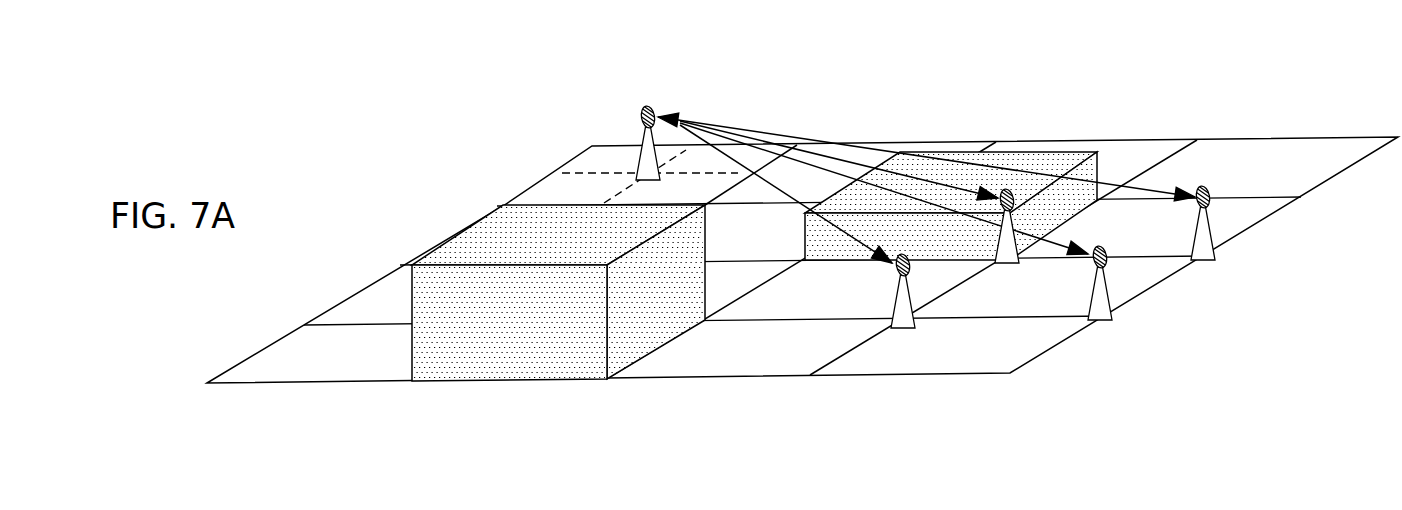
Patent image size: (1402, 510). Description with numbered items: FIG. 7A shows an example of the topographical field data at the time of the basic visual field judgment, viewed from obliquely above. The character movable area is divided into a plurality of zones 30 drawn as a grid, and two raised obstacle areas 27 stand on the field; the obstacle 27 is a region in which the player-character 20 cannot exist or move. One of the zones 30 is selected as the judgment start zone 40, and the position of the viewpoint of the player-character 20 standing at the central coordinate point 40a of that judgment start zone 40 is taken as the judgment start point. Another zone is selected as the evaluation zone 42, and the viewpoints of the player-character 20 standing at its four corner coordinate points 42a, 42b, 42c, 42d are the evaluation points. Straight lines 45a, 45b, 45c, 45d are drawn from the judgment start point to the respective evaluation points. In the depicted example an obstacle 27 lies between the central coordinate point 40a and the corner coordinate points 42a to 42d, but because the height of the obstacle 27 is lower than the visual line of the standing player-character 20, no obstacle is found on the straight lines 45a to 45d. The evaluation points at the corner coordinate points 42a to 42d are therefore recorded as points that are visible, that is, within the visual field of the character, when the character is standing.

The player-character 20 is at (648, 104).
The obstacle area 27 is at (480, 370).
The zone 30 is at (1287, 155).
The judgment start zone 40 is at (605, 163).
The central coordinate point 40a is at (640, 171).
The evaluation zone 42 is at (1035, 286).
The corner coordinate point 42a is at (1003, 260).
The corner coordinate point 42b is at (1203, 259).
The corner coordinate point 42c is at (1103, 320).
The corner coordinate point 42d is at (893, 327).
The straight line 45a is at (823, 156).
The straight line 45b is at (791, 138).
The straight line 45c is at (849, 175).
The straight line 45d is at (731, 160).